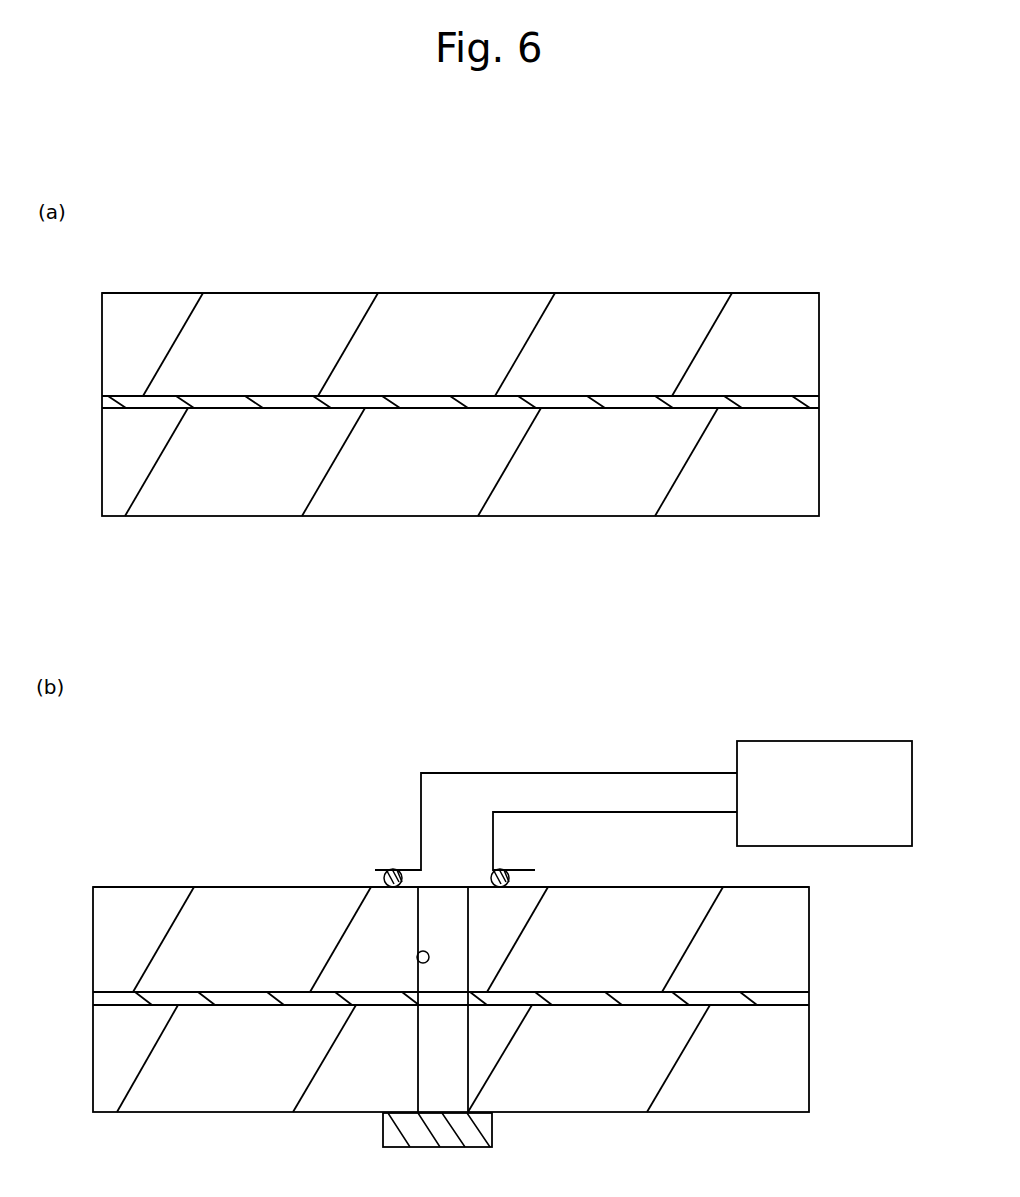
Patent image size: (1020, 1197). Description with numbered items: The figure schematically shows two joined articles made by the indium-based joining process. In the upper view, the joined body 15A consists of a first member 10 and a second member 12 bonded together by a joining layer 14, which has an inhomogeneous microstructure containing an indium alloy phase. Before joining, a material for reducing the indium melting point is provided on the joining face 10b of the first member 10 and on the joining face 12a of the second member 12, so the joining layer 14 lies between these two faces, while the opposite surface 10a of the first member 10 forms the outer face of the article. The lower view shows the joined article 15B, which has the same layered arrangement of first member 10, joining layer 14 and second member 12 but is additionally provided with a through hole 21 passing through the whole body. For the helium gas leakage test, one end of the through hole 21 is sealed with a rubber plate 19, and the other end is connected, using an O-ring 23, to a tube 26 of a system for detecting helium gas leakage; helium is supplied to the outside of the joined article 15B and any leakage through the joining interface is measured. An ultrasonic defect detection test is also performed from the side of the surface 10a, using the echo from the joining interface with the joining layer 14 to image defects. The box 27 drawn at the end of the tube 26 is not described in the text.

The first member 10 is at (798, 344).
The surface of the joined article 10a is at (638, 293).
The joining face of the first member 10b is at (632, 397).
The second member 12 is at (802, 466).
The joining face of the second member 12a is at (473, 408).
The joining layer 14 is at (307, 396).
The joined body 15A is at (836, 285).
The joined article 15B is at (823, 927).
The rubber plate 19 is at (448, 1142).
The through hole 21 is at (417, 964).
The O-ring 23 is at (385, 876).
The tube 26 is at (572, 773).
The power supply / detector 27 is at (854, 811).